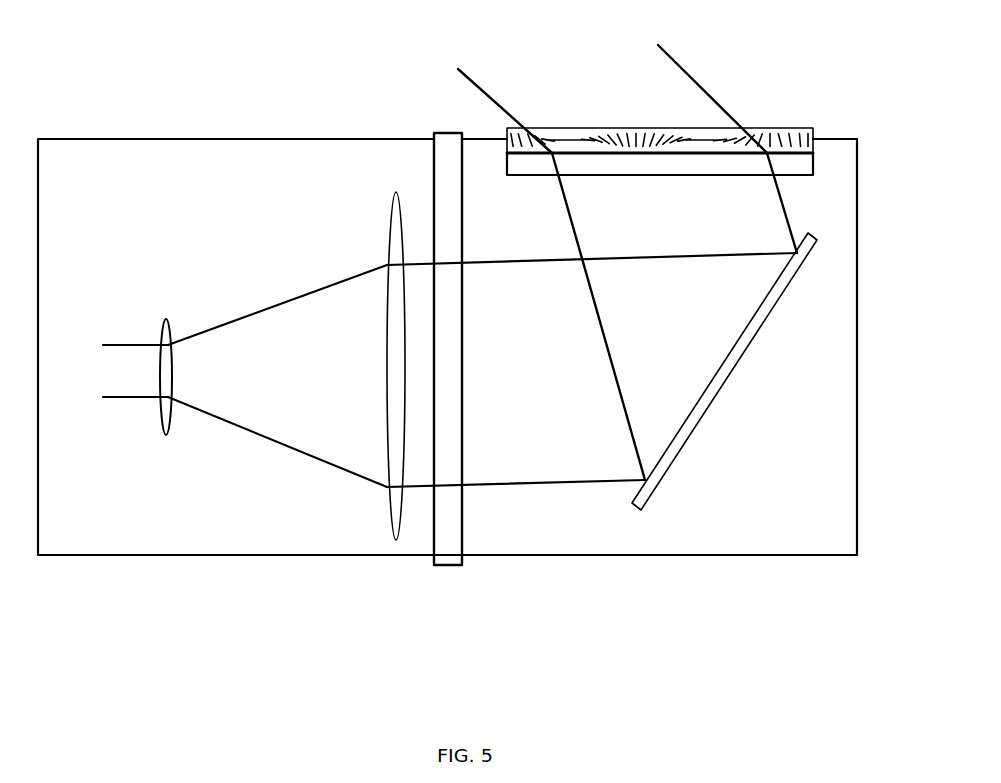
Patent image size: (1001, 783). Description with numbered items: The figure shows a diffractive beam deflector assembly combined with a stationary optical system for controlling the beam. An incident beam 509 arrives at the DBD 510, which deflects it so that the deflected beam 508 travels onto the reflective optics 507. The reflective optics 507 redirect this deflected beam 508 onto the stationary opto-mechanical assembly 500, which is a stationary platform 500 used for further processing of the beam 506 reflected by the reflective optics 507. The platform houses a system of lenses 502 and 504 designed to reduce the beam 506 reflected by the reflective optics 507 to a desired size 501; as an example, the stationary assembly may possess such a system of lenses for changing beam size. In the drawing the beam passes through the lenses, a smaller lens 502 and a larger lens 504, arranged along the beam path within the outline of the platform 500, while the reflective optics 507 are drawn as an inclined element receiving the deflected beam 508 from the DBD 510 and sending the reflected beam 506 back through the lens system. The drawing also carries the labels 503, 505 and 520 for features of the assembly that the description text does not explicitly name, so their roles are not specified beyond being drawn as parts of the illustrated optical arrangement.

The stationary opto-mechanical assembly 500 is at (103, 547).
The desired size 501 is at (118, 371).
The lens 502 is at (170, 425).
The diverging light beam 503 is at (292, 305).
The lens 504 is at (397, 240).
The optical plate 505 is at (445, 140).
The beam reflected by the reflective optics 506 is at (505, 270).
The reflective optics 507 is at (697, 423).
The deflected beam 508 is at (568, 208).
The incident beam 509 is at (690, 75).
The DBD (diffractive beam deflector) 510 is at (790, 128).
The housing 520 is at (807, 540).